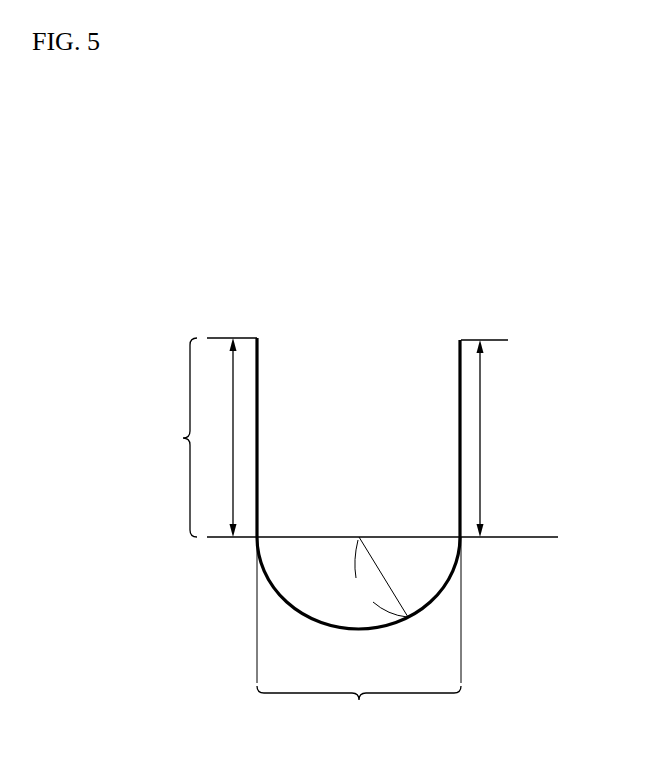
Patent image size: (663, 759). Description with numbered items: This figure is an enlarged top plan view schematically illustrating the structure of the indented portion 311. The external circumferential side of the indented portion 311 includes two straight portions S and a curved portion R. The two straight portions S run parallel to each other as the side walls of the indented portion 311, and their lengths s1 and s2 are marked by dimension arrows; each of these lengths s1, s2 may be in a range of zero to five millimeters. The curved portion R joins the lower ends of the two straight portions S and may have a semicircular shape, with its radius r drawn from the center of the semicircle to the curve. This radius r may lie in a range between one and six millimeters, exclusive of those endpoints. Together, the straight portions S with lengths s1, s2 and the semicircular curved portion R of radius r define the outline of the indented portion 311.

The indented portion 311 is at (382, 212).
The straight portions S is at (180, 437).
The length of straight portion s1 is at (220, 437).
The length of straight portion s2 is at (495, 438).
The curved portion R is at (359, 636).
The radius of curved portion r is at (381, 577).